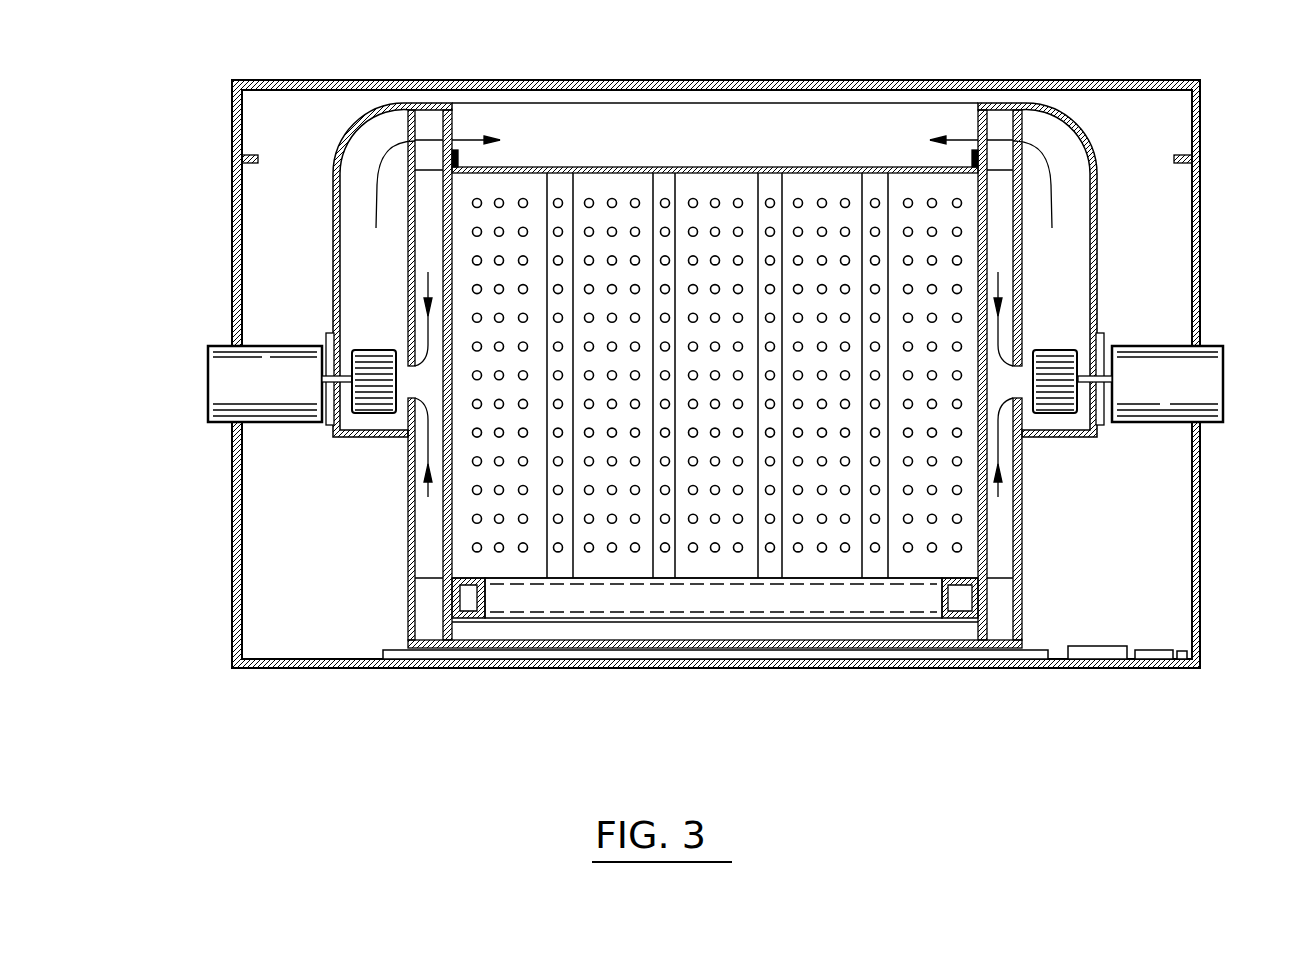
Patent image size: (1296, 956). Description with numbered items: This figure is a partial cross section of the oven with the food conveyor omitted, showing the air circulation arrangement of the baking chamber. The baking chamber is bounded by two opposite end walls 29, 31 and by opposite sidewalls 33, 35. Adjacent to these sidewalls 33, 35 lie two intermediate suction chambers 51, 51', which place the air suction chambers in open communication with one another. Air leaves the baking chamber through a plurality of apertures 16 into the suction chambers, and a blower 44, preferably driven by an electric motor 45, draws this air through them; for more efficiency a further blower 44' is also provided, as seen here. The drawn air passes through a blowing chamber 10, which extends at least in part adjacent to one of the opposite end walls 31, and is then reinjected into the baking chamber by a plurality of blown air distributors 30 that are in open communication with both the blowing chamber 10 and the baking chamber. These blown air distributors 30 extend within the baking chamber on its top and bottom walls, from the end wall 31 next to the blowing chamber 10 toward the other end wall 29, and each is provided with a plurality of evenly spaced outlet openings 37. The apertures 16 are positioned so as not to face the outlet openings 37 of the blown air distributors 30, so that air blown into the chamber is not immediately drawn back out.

The blowing chamber 10 is at (845, 102).
The apertures 16 is at (664, 200).
The end wall 29 is at (843, 667).
The blown air distributors 30 is at (708, 563).
The end wall 31 is at (742, 81).
The sidewall 33 is at (1016, 495).
The sidewall 35 is at (410, 484).
The outlet openings 37 is at (825, 555).
The blower 44 is at (1055, 349).
The blower 44' is at (374, 350).
The electric motor 45 is at (215, 345).
The intermediate suction chamber 51 is at (1012, 375).
The intermediate suction chamber 51' is at (678, 379).